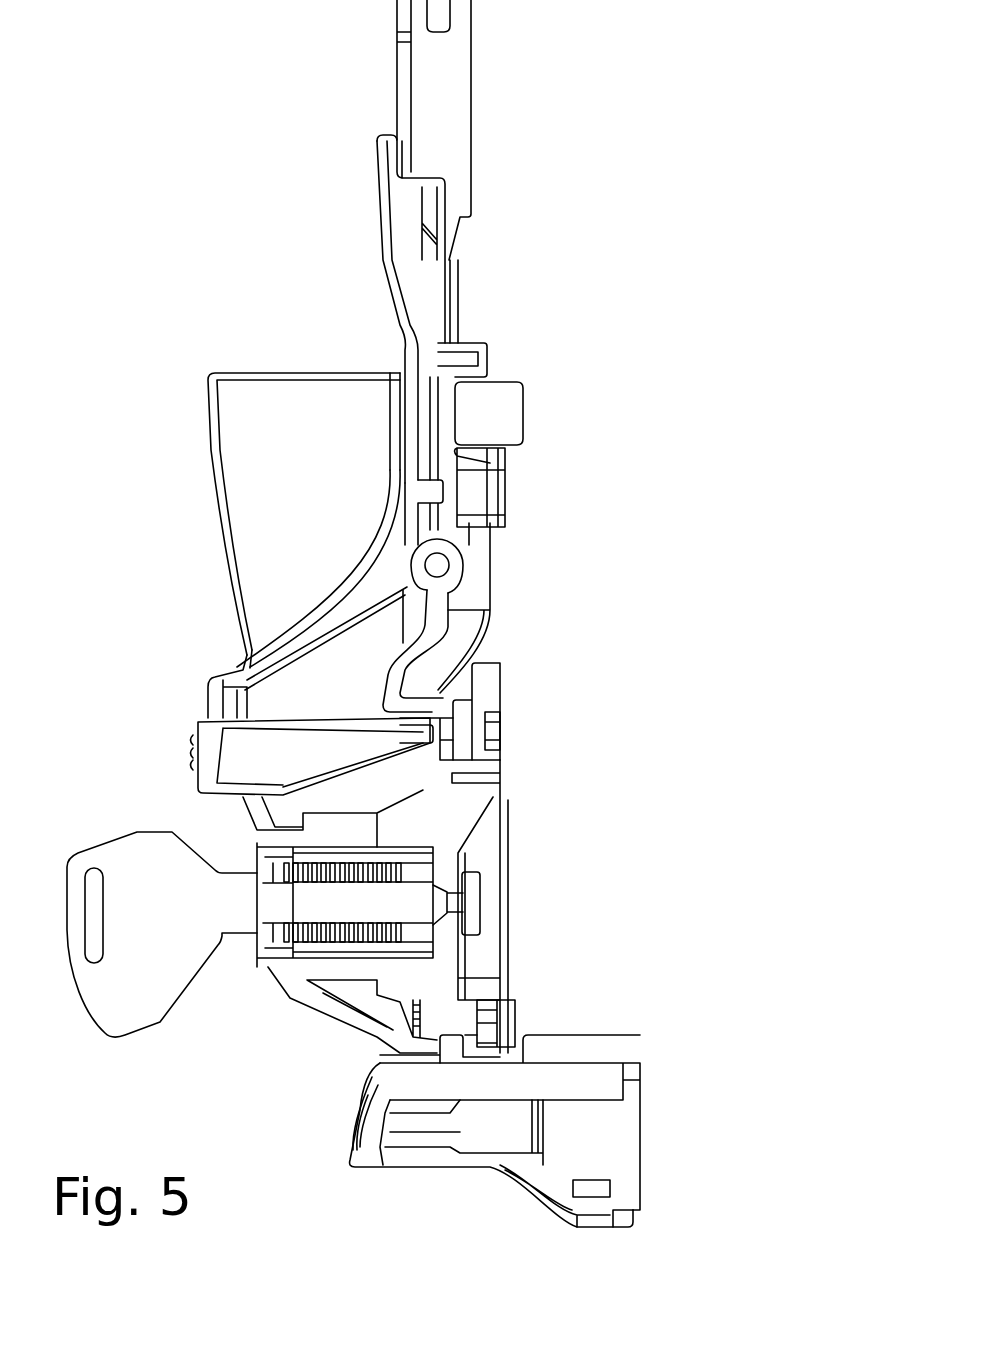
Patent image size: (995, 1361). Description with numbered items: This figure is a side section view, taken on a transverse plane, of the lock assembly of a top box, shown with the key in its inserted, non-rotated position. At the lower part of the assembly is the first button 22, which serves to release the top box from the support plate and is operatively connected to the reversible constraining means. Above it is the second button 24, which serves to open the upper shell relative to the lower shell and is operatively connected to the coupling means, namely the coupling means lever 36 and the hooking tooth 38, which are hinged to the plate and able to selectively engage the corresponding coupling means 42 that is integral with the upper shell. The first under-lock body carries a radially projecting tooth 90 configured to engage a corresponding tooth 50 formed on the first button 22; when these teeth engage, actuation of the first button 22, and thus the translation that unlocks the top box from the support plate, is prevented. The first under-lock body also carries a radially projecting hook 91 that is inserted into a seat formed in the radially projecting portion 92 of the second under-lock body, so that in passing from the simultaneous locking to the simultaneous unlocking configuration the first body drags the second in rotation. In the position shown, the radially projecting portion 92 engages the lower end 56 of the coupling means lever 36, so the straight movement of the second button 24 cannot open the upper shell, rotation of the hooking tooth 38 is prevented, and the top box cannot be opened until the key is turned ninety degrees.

The first button 22 is at (390, 1178).
The second button 24 is at (153, 735).
The coupling means lever 36 is at (487, 545).
The hooking tooth 38 is at (502, 330).
The coupling means 42 is at (486, 65).
The tooth 50 is at (403, 1059).
The lower end 56 is at (458, 743).
The radially projecting tooth 90 is at (539, 1008).
The radially projecting hook 91 is at (521, 730).
The radially projecting portion 92 is at (517, 672).